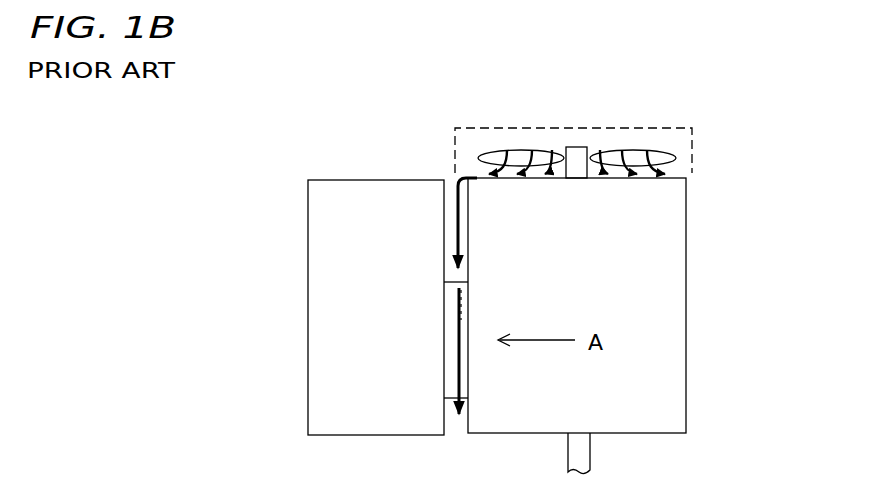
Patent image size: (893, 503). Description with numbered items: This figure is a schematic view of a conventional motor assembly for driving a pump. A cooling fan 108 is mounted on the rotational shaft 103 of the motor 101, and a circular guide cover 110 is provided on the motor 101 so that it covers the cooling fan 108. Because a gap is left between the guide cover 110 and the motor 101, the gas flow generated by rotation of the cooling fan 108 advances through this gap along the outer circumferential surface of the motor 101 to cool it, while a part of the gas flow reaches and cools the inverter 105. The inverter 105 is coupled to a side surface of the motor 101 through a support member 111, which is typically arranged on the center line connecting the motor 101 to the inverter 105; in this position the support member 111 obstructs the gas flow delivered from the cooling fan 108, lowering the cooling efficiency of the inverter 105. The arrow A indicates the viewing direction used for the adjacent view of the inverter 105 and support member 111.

The motor 101 is at (686, 240).
The rotational shaft 103 is at (590, 453).
The inverter 105 is at (309, 303).
The cooling fan 108 is at (658, 150).
The guide cover 110 is at (472, 128).
The support member 111 is at (448, 370).